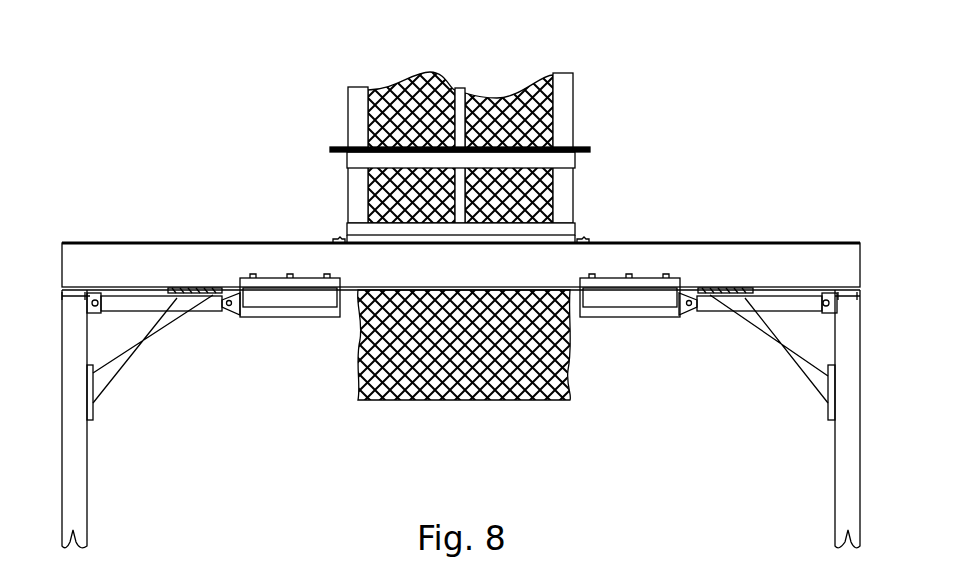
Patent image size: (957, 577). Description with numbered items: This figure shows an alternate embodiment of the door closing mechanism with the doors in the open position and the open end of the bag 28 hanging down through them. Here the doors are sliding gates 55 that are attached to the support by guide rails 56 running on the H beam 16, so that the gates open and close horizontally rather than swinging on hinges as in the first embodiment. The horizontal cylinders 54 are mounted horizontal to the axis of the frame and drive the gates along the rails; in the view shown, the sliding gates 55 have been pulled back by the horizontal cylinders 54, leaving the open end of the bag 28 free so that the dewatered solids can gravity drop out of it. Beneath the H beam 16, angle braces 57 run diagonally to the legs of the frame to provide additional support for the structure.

The H beam 16 is at (607, 267).
The bag 28 is at (483, 375).
The horizontal cylinders 54 is at (148, 303).
The sliding gates 55 is at (247, 310).
The guide rails 56 is at (290, 295).
The angle braces 57 is at (97, 400).